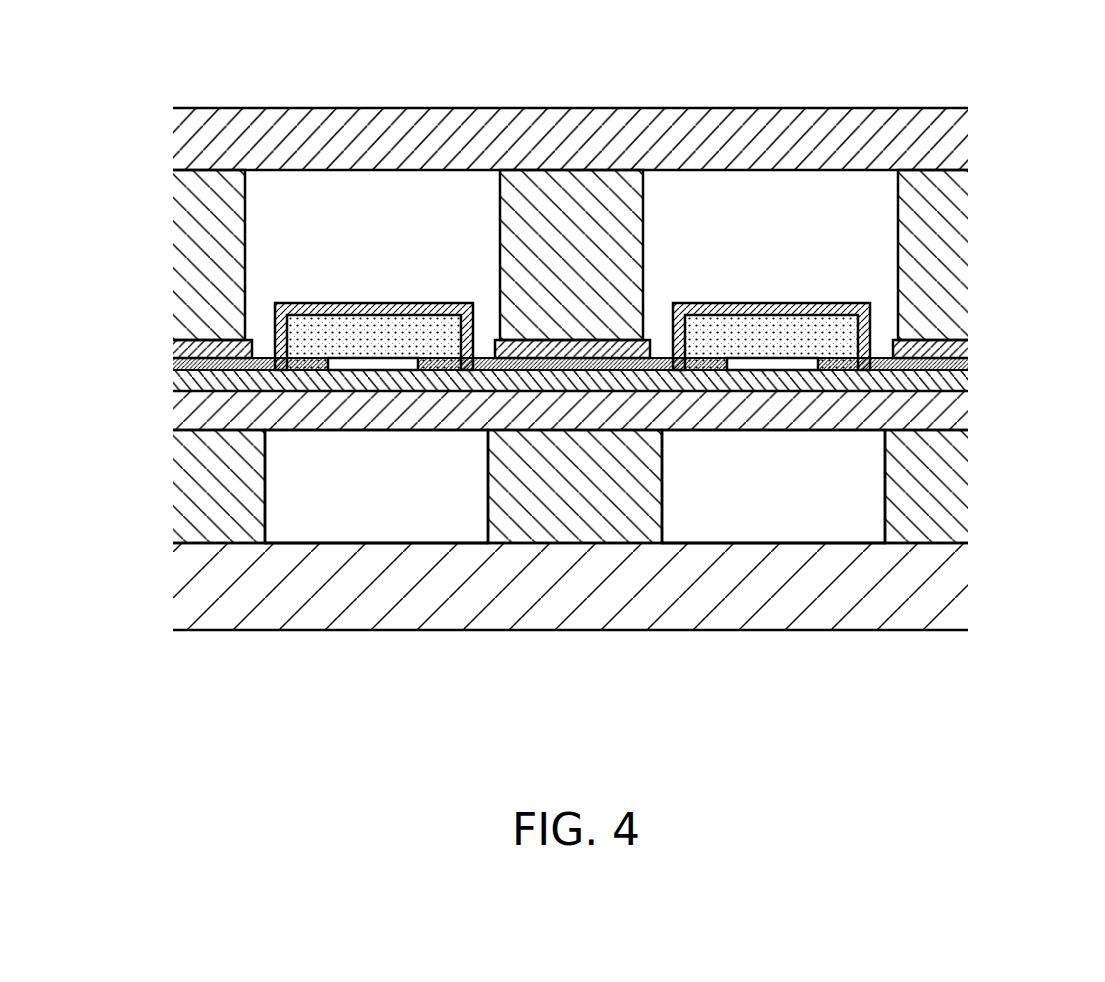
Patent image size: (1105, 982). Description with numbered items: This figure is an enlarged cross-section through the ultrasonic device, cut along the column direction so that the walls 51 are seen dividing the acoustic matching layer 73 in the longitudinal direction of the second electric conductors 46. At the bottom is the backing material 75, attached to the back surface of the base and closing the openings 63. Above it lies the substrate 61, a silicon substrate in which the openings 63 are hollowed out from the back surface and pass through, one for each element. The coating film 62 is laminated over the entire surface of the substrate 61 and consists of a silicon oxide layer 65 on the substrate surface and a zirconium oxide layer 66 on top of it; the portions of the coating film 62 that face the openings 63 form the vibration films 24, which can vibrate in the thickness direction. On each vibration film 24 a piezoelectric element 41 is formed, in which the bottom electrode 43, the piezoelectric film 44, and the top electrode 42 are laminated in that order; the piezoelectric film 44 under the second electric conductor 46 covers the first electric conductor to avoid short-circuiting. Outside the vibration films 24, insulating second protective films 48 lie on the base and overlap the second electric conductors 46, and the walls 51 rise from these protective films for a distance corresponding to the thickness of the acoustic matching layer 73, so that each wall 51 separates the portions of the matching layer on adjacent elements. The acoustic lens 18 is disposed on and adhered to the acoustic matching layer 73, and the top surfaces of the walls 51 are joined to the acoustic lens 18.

The acoustic lens 18 is at (224, 108).
The acoustic matching layer 73 is at (422, 185).
The wall 51 is at (180, 261).
The second protective film 48 is at (200, 342).
The piezoelectric element 41 is at (563, 281).
The top electrode 42 is at (561, 289).
The second electric conductor 46 is at (292, 305).
The bottom electrode 43 is at (355, 353).
The piezoelectric film 44 is at (438, 327).
The coating film 62 is at (638, 385).
The zirconium oxide layer 66 is at (967, 382).
The silicon oxide layer 65 is at (967, 413).
The substrate 61 is at (606, 515).
The vibration film 24 is at (380, 431).
The opening 63 is at (487, 513).
The backing material 75 is at (768, 630).